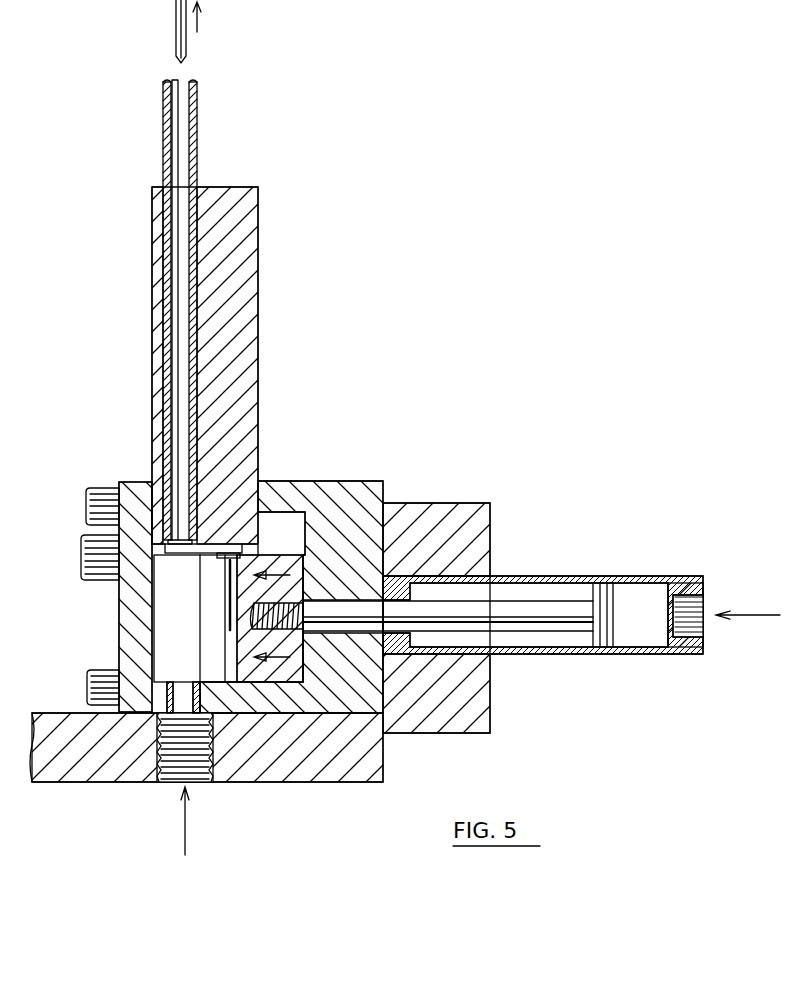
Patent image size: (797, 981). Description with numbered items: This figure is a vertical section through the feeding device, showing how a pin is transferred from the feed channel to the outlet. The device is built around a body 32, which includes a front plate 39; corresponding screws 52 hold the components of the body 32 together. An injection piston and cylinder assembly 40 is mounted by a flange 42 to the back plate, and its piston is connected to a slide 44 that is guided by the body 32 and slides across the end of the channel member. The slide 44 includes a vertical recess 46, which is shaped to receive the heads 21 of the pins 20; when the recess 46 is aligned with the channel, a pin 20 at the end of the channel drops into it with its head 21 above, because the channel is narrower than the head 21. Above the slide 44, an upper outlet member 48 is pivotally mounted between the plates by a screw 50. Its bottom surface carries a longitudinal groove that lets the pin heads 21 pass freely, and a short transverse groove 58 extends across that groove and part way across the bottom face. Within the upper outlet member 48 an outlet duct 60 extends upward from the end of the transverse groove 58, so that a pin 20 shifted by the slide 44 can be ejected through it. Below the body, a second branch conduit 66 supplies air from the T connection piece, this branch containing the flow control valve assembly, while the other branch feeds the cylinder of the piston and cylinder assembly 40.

The pin 20 is at (224, 600).
The head 21 is at (214, 570).
The body 32 is at (370, 500).
The front plate 39 is at (138, 492).
The injection piston and cylinder assembly 40 is at (536, 640).
The flange 42 is at (477, 516).
The slide 44 is at (240, 676).
The vertical recess 46 is at (230, 647).
The upper outlet member 48 is at (248, 258).
The screw 50 is at (100, 492).
The screw 52 is at (98, 582).
The transverse groove 58 is at (206, 556).
The outlet duct 60 is at (199, 150).
The second branch conduit 66 is at (177, 765).